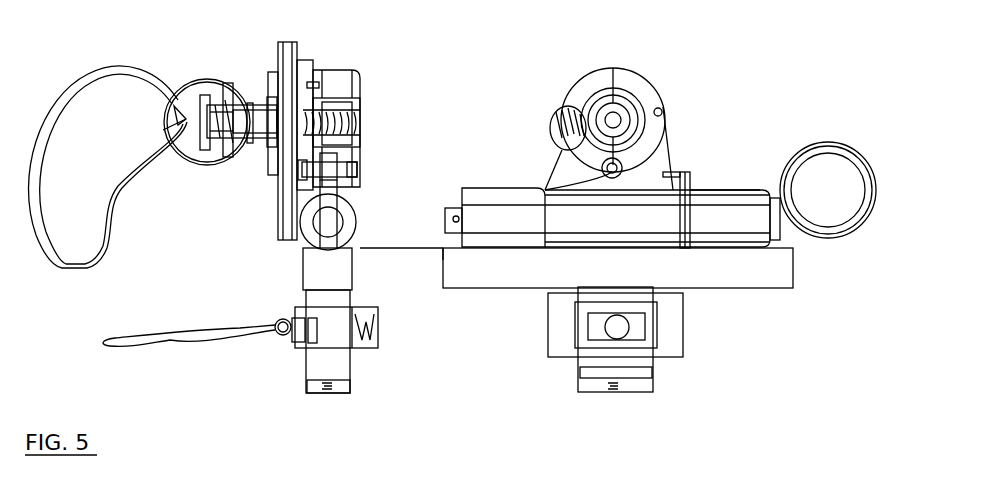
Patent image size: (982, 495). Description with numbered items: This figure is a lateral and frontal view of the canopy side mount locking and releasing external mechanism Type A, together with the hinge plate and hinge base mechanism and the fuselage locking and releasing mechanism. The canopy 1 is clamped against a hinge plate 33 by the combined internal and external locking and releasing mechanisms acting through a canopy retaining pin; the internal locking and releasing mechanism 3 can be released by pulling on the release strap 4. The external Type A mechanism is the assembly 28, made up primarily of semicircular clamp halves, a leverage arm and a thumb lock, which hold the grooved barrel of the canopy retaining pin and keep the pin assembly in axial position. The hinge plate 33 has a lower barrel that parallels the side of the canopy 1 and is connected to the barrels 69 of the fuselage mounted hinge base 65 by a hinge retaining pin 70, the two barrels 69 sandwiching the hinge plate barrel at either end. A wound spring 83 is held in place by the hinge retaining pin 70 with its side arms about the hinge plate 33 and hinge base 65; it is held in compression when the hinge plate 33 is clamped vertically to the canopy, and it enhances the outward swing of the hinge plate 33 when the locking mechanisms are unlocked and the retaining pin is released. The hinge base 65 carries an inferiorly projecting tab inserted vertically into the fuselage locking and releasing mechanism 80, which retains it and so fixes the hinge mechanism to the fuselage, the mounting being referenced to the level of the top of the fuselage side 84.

The canopy 1 is at (287, 219).
The knob assembly 3 is at (215, 30).
The release strap 4 is at (82, 88).
The external canopy retaining pin locking and releasing mechanism Type A 28 is at (527, 118).
The hinge plate 33 is at (660, 160).
The hinge base 65 is at (315, 271).
The hinge barrels 69 is at (733, 197).
The hinge retaining pin 70 is at (732, 218).
The fuselage locking and releasing mechanism 80 is at (517, 347).
The wound spring 83 is at (692, 170).
The level of top of fuselage side 84 is at (397, 247).